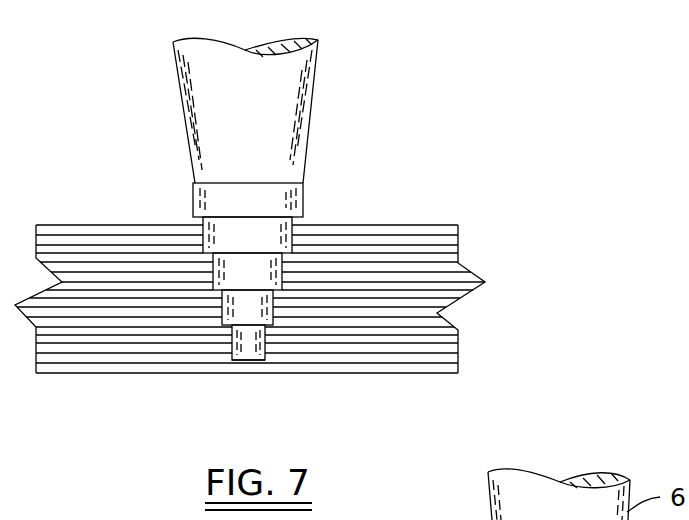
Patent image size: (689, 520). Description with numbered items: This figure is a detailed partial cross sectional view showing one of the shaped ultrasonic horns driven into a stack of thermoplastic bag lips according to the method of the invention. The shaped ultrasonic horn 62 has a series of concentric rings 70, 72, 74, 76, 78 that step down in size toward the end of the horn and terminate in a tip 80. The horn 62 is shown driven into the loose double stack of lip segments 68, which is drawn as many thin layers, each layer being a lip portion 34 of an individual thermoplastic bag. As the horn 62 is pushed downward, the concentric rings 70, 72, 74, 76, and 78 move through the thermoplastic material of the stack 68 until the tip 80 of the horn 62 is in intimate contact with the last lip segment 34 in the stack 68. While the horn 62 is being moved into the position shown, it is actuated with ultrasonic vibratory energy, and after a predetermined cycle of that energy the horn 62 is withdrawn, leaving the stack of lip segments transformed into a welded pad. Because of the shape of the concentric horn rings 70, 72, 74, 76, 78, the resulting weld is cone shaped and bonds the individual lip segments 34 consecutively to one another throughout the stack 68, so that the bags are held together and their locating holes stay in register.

The shaped ultrasonic horn 62 is at (317, 85).
The concentric ring 70 is at (304, 193).
The concentric ring 72 is at (203, 221).
The concentric ring 74 is at (227, 283).
The concentric ring 76 is at (273, 320).
The concentric ring 78 is at (233, 362).
The tip 80 is at (246, 362).
The loose double stack of lip segments 68 is at (297, 280).
The lip portion 34 is at (485, 374).